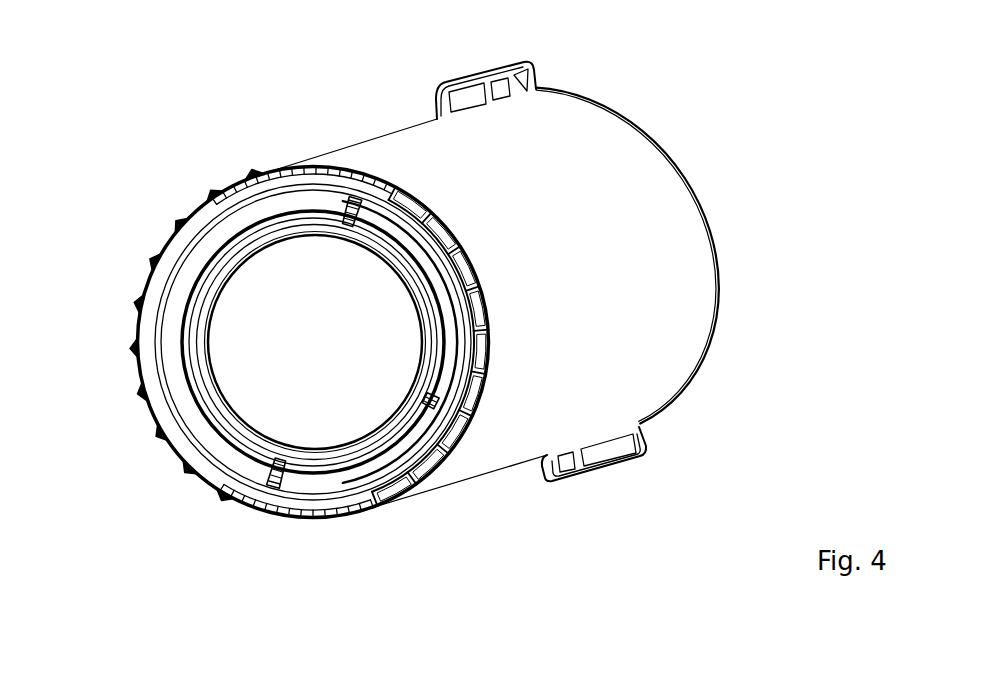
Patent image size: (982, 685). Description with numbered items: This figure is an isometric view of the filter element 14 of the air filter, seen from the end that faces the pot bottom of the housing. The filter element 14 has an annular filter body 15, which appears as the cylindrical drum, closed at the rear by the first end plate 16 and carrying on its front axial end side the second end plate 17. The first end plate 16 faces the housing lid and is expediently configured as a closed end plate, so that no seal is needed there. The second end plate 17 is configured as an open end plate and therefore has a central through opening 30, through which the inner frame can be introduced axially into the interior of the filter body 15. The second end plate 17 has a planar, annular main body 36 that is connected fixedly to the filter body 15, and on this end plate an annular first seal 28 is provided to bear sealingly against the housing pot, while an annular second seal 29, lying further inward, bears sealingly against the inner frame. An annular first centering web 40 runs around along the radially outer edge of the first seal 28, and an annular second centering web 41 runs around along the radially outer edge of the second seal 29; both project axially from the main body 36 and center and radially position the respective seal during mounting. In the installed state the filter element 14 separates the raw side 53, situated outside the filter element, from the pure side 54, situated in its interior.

The filter element 14 is at (780, 152).
The filter body 15 is at (667, 302).
The first end plate 16 is at (718, 236).
The second end plate 17 is at (214, 172).
The first seal 28 is at (138, 320).
The second seal 29 is at (190, 285).
The central through opening 30 is at (263, 243).
The main body 36 is at (182, 391).
The first centering web 40 is at (136, 357).
The second centering web 41 is at (220, 436).
The raw side 53 is at (531, 514).
The pure side 54 is at (325, 362).